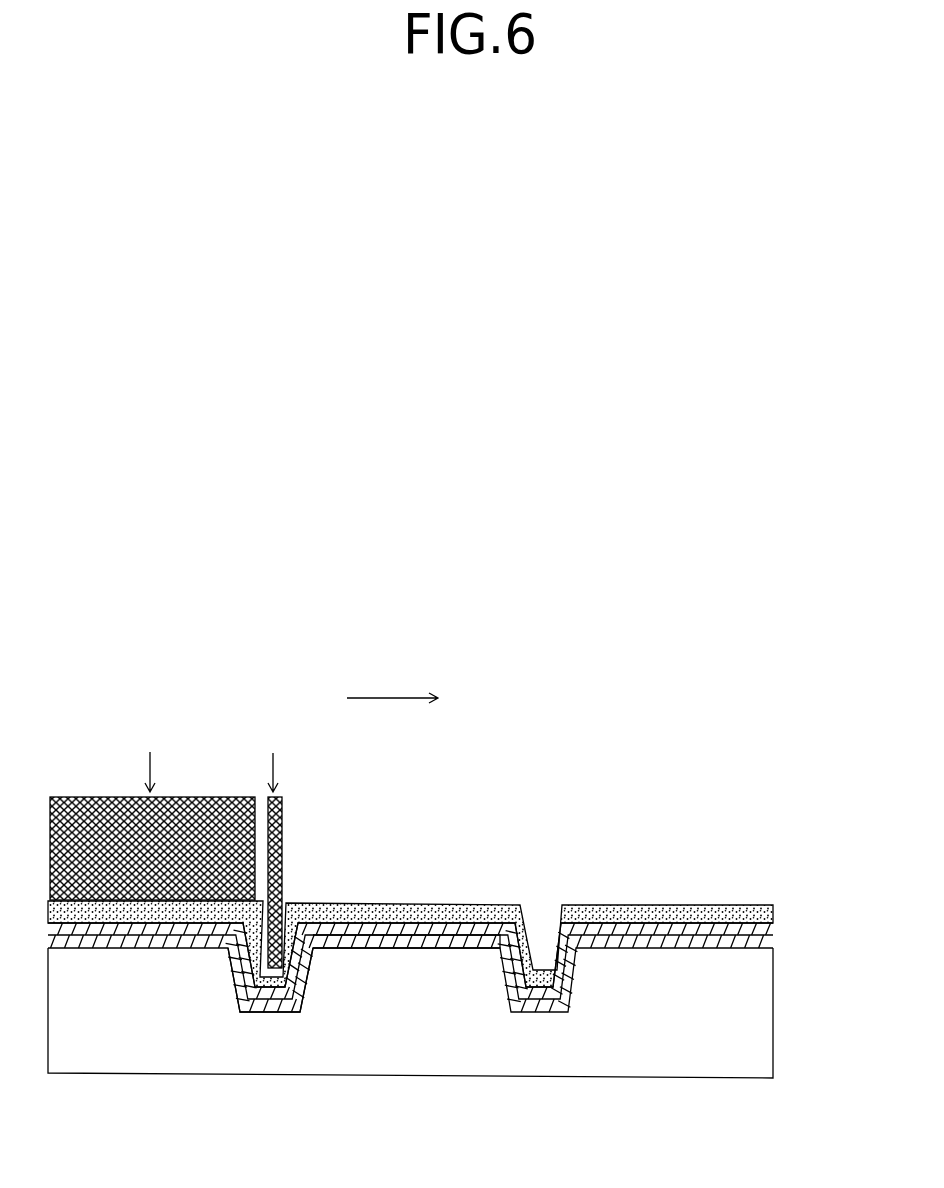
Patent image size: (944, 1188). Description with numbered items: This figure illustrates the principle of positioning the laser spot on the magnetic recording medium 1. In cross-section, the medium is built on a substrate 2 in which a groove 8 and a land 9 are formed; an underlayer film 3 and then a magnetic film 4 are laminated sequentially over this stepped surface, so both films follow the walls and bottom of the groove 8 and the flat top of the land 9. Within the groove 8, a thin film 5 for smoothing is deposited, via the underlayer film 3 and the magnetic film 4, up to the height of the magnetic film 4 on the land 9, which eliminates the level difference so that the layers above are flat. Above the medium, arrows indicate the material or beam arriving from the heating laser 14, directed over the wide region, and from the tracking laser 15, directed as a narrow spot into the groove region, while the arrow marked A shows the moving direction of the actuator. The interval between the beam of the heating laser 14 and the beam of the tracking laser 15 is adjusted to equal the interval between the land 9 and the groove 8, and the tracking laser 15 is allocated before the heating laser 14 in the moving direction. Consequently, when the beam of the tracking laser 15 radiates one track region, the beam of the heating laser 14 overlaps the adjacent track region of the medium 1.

The magnetic recording medium 1 is at (770, 1080).
The substrate 2 is at (773, 1038).
The underlayer film 3 is at (778, 955).
The magnetic film 4 is at (778, 936).
The thin film for smoothing 5 is at (680, 904).
The groove 8 is at (273, 1014).
The land 9 is at (403, 950).
The heating laser 14 is at (178, 724).
The tracking laser 15 is at (426, 712).